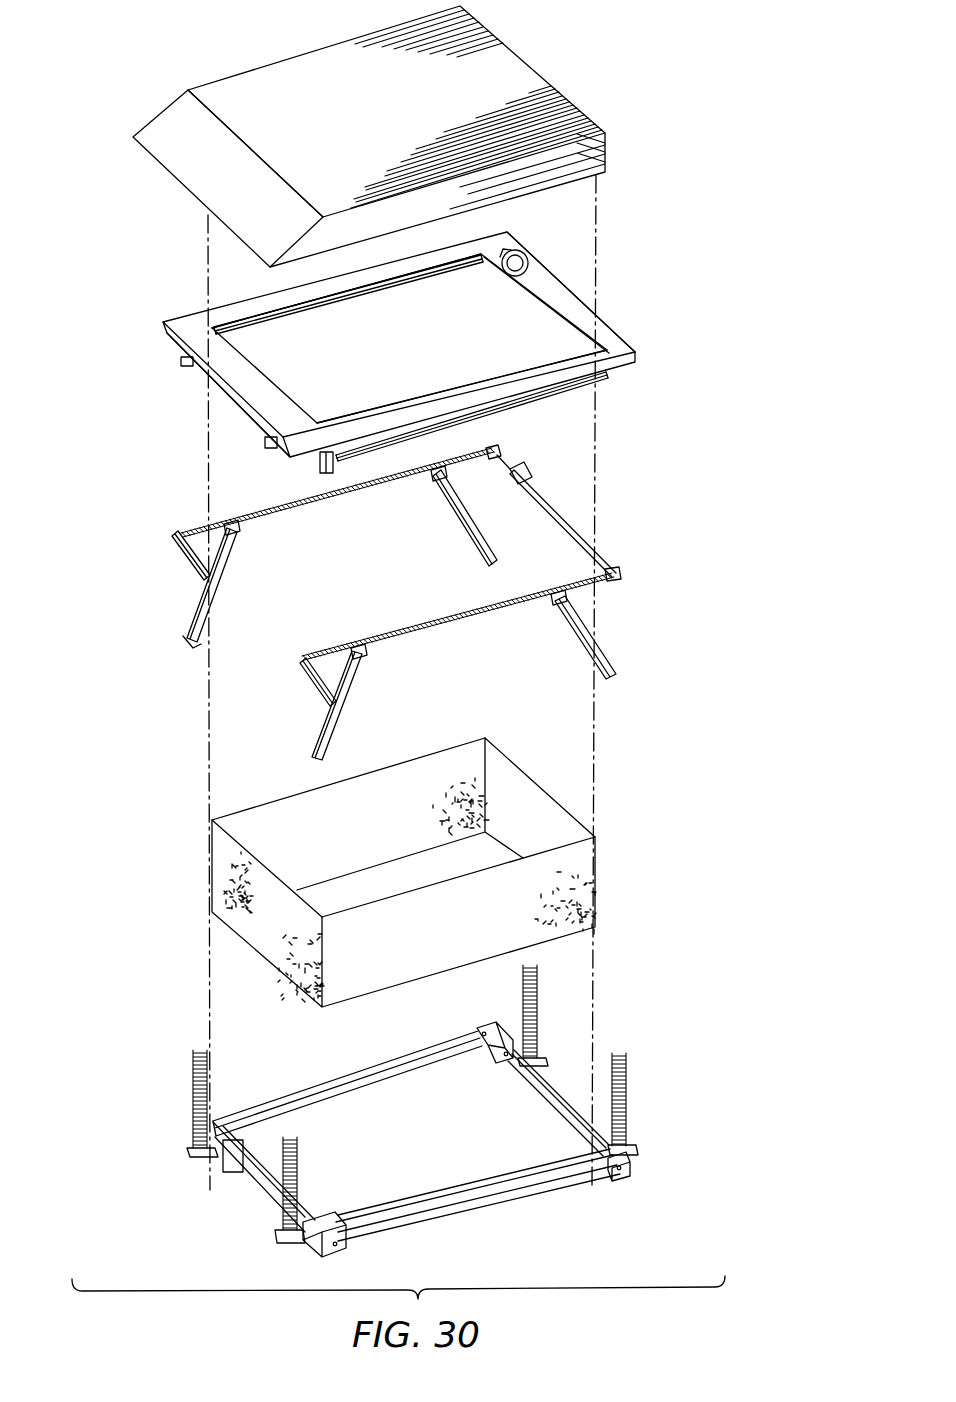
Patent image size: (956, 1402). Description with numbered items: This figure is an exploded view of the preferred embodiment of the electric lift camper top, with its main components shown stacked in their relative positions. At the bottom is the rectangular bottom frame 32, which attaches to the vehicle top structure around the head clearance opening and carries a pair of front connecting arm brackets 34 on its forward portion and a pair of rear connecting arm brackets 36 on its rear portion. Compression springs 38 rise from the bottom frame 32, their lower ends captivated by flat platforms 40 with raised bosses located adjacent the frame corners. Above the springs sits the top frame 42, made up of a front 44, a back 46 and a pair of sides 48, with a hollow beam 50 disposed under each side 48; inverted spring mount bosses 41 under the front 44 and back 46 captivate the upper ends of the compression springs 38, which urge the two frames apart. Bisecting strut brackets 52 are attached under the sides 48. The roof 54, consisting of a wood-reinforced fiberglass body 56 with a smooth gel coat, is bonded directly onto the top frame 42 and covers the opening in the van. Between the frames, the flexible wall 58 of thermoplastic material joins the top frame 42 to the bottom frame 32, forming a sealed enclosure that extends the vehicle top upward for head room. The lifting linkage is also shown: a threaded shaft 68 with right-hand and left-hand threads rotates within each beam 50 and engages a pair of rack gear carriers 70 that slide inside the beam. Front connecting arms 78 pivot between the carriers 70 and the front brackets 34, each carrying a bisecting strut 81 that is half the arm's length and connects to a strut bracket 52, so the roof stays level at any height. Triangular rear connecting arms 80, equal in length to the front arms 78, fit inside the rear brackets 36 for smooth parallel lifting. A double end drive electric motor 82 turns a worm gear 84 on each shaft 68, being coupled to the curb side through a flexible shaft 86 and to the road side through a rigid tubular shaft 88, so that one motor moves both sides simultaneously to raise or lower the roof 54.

The bottom frame 32 is at (363, 1078).
The front connecting arm brackets 34 is at (190, 1122).
The rear connecting arm brackets 36 is at (483, 1028).
The compression springs 38 is at (539, 1000).
The flat platforms 40 is at (545, 1060).
The spring mount bosses 41 is at (528, 255).
The top frame 42 is at (600, 295).
The front 44 is at (240, 415).
The back 46 is at (616, 328).
The sides 48 is at (261, 293).
The hollow beam 50 is at (365, 290).
The bisecting strut brackets 52 is at (320, 470).
The roof 54 is at (548, 61).
The fiberglass body 56 is at (183, 110).
The flexible wall 58 is at (596, 857).
The shaft 68 is at (324, 500).
The rack gear carriers 70 is at (238, 535).
The front connecting arms 78 is at (182, 643).
The rear connecting arms 80 is at (471, 516).
The bisecting struts 81 is at (180, 553).
The double end drive electric motor 82 is at (527, 480).
The worm gear 84 is at (499, 452).
The flexible shaft 86 is at (508, 462).
The rigid tubular shaft 88 is at (599, 550).